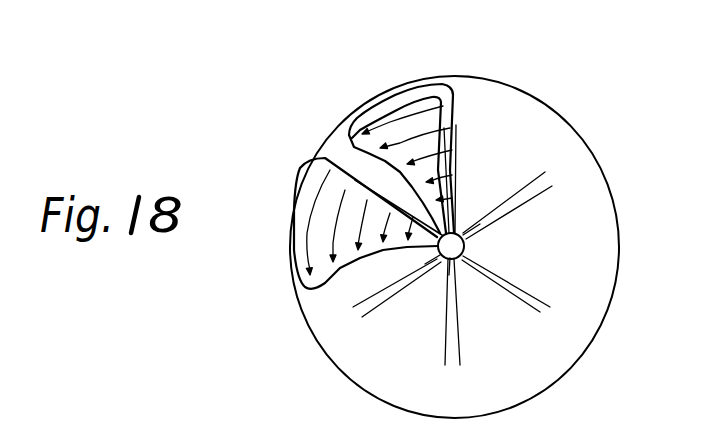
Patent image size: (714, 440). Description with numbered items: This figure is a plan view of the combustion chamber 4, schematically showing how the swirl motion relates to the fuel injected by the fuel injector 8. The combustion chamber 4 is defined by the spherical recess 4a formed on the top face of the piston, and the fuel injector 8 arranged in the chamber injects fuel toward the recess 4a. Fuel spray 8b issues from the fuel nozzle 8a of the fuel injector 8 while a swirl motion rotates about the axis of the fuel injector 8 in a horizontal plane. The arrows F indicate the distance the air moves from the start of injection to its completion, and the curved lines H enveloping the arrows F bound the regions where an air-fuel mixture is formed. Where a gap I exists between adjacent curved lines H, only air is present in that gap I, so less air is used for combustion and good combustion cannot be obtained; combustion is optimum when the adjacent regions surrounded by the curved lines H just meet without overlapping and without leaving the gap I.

The combustion chamber 4 is at (547, 110).
The spherical recess 4a is at (611, 185).
The fuel injector 8 is at (460, 257).
The fuel nozzle 8a is at (467, 226).
The fuel spray 8b is at (528, 195).
The gap I is at (338, 144).
The curved lines H is at (298, 165).
The arrows F is at (389, 132).